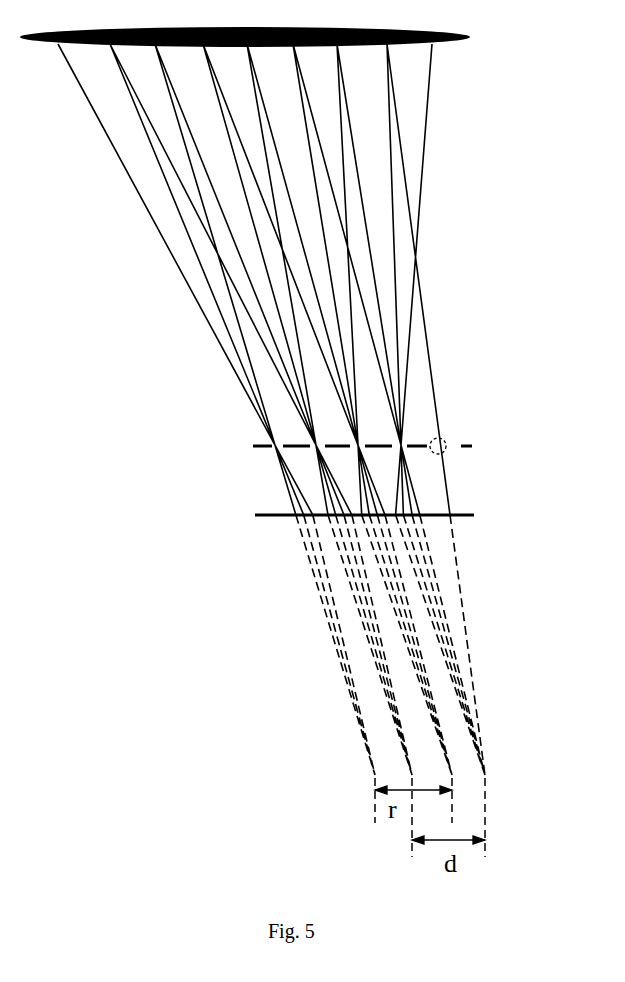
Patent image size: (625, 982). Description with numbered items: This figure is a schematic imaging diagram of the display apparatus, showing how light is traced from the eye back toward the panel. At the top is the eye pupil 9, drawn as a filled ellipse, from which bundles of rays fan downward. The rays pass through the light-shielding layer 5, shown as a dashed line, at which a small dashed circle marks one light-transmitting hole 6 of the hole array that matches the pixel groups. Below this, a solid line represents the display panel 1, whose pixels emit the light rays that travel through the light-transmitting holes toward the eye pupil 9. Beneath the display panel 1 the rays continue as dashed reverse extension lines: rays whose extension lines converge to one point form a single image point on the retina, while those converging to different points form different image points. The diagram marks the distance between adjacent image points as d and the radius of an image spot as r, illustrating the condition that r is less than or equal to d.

The eye pupil 9 is at (470, 38).
The light-transmitting hole 6 is at (444, 440).
The light-shielding layer 5 is at (448, 443).
The display panel 1 is at (467, 513).